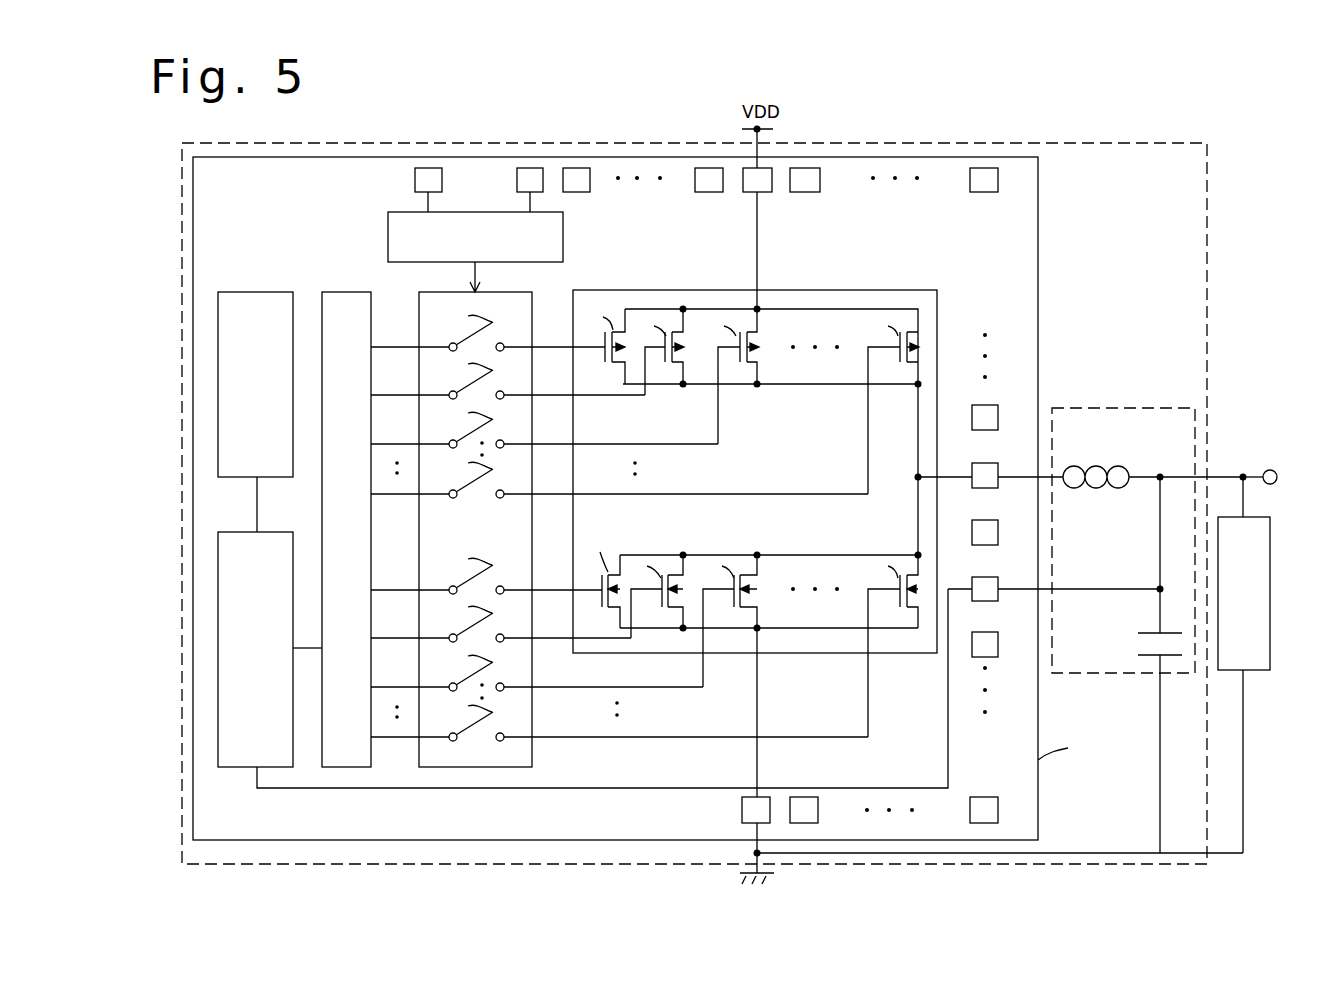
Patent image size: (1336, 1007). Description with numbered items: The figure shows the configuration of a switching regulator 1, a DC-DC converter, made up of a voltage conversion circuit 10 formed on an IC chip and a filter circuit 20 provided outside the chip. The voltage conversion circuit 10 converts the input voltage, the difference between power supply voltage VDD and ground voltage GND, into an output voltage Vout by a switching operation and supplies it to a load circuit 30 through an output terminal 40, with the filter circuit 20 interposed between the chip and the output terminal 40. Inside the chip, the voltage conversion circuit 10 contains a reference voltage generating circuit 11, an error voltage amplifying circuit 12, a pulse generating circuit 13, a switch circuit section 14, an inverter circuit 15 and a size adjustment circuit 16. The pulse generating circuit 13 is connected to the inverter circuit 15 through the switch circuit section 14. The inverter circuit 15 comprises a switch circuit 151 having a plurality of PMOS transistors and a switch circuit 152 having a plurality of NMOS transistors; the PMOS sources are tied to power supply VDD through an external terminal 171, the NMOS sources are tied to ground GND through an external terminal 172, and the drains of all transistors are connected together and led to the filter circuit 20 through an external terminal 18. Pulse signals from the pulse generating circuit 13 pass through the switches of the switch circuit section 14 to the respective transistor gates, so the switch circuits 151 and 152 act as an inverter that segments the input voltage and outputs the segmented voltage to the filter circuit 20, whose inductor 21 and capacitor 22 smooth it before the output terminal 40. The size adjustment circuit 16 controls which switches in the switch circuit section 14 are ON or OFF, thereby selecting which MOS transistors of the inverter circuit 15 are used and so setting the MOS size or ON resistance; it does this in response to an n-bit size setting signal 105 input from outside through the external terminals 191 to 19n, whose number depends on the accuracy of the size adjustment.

The switching regulator 1 is at (322, 143).
The voltage conversion circuit 10 is at (280, 156).
The reference voltage generating circuit 11 is at (257, 292).
The error voltage amplifying circuit 12 is at (268, 532).
The pulse generating circuit 13 is at (348, 292).
The switch circuit section 14 is at (532, 292).
The inverter circuit 15 is at (670, 290).
The size adjustment circuit 16 is at (386, 237).
The external terminal 18 is at (982, 463).
The filter circuit 20 is at (1147, 597).
The inductor 21 is at (1098, 462).
The capacitor 22 is at (1142, 643).
The load circuit 30 is at (1270, 598).
The output terminal 40 is at (1278, 481).
The size setting signal 105 is at (523, 199).
The switch circuit 151 is at (771, 404).
The switch circuit 152 is at (746, 548).
The external terminal 171 is at (766, 193).
The external terminal 172 is at (742, 815).
The external terminal 191 is at (429, 168).
The external terminal 19n is at (532, 168).